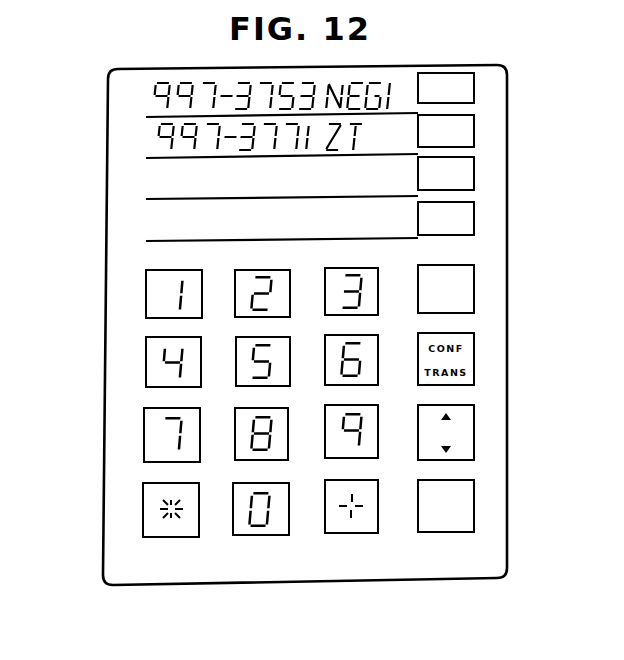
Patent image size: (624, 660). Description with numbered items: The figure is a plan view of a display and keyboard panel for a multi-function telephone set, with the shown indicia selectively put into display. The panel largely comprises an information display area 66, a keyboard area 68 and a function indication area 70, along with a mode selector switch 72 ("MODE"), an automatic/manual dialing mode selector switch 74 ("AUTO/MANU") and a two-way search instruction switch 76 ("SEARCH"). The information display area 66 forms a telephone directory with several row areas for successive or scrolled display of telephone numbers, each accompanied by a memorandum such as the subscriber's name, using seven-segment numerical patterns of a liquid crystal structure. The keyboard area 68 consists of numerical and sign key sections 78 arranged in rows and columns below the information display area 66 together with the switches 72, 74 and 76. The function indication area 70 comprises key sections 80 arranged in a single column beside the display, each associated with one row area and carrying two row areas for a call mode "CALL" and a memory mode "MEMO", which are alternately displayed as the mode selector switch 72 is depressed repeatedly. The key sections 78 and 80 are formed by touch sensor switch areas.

The information display area 66 is at (131, 148).
The keyboard area 68 is at (131, 272).
The function indication area 70 is at (476, 168).
The mode selector switch 72 is at (474, 507).
The automatic/manual dialing mode selector switch 74 is at (474, 287).
The two-way search instruction switch 76 is at (474, 418).
The numerical and sign key sections 78 is at (324, 528).
The key sections 80 is at (474, 132).